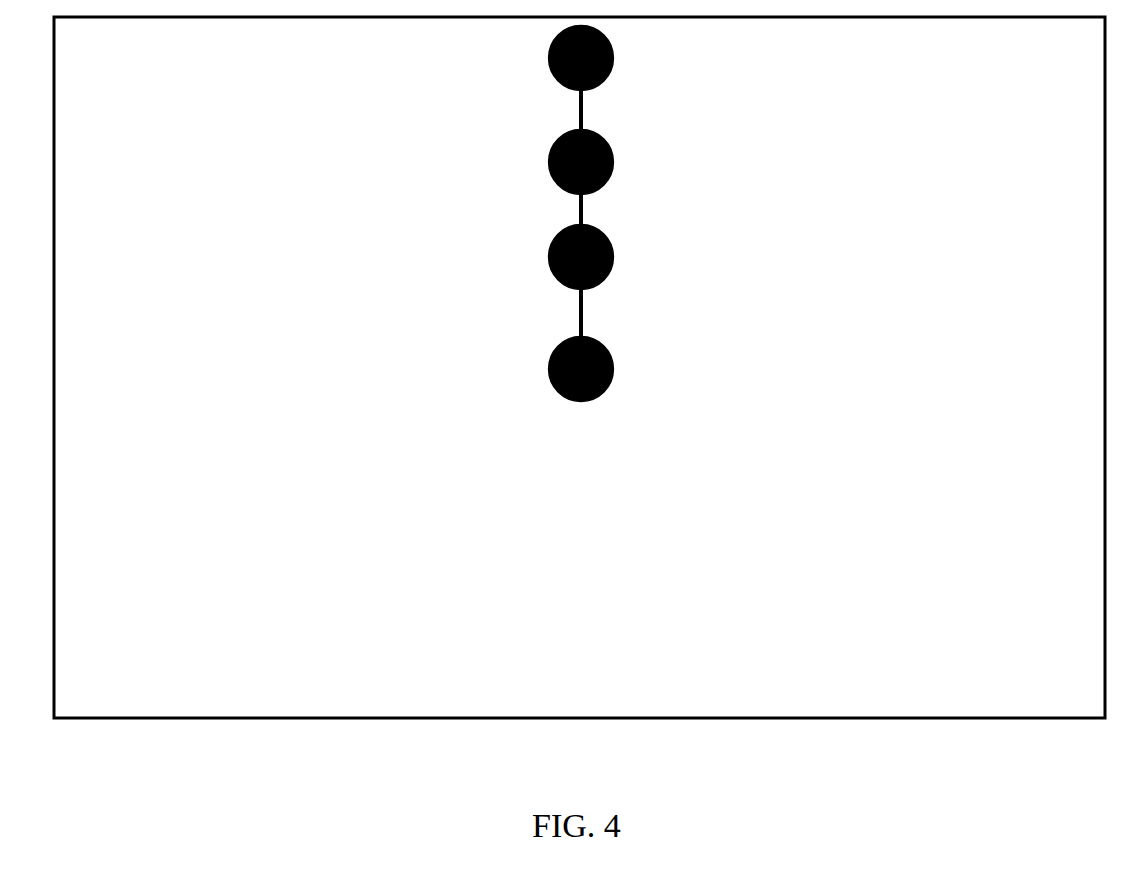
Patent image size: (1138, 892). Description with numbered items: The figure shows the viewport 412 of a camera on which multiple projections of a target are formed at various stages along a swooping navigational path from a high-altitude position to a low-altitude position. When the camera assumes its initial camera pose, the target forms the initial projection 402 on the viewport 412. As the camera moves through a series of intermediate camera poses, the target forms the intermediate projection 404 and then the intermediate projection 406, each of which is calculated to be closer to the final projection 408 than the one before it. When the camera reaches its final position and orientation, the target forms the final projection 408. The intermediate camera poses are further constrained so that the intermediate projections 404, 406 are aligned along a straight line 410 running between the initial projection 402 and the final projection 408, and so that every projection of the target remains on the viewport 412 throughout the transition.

The initial projection 402 is at (549, 73).
The intermediate projection 404 is at (549, 183).
The intermediate projection 406 is at (549, 277).
The final projection 408 is at (557, 393).
The straight line 410 is at (582, 210).
The viewport 412 is at (938, 718).